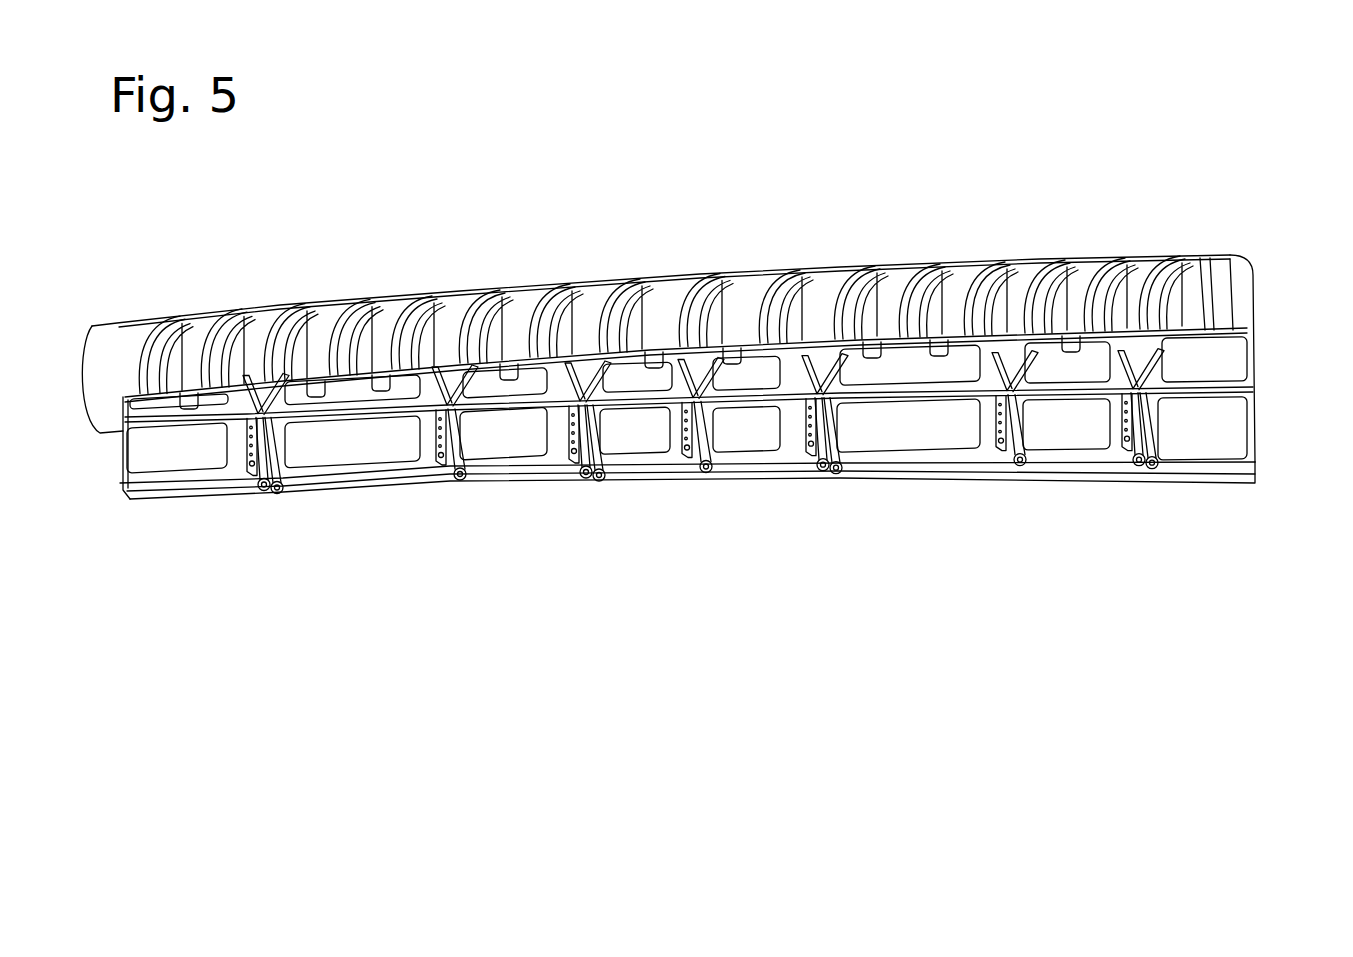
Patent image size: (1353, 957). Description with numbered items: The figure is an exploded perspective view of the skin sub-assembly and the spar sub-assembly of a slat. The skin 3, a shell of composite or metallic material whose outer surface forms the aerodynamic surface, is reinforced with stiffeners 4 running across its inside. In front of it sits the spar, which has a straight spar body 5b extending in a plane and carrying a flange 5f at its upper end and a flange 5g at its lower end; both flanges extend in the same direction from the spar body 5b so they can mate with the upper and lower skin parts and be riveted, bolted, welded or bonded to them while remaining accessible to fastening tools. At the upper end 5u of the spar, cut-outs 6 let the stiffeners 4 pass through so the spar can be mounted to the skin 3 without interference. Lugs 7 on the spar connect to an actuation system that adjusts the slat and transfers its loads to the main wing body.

The skin 3 is at (1251, 270).
The stiffeners 4 is at (440, 300).
The flange 5f is at (1231, 330).
The upper end of the spar 5u is at (1251, 350).
The spar body 5b is at (1257, 420).
The flange 5g is at (1223, 472).
The cut-outs 6 is at (814, 350).
The lugs 7 is at (1012, 470).